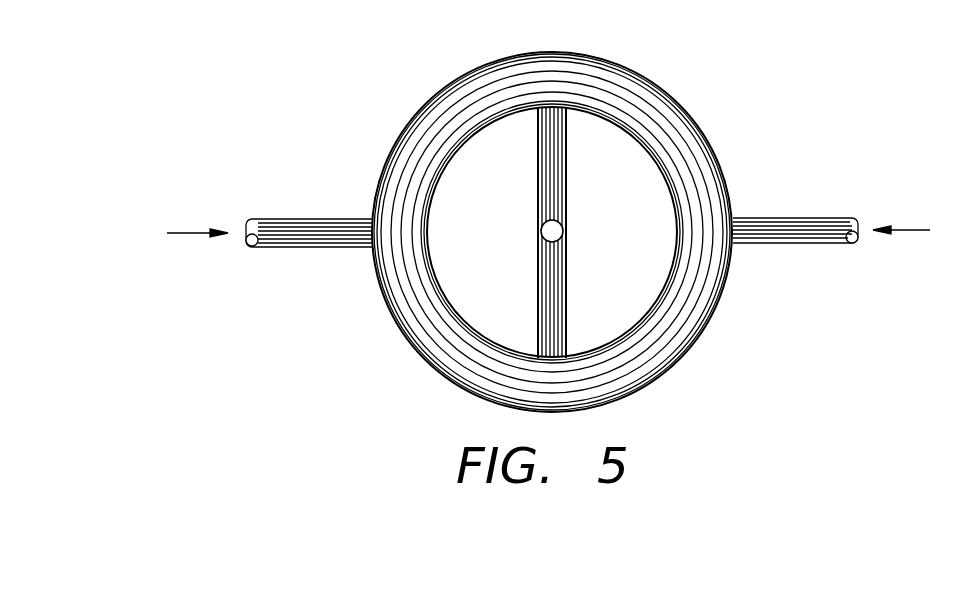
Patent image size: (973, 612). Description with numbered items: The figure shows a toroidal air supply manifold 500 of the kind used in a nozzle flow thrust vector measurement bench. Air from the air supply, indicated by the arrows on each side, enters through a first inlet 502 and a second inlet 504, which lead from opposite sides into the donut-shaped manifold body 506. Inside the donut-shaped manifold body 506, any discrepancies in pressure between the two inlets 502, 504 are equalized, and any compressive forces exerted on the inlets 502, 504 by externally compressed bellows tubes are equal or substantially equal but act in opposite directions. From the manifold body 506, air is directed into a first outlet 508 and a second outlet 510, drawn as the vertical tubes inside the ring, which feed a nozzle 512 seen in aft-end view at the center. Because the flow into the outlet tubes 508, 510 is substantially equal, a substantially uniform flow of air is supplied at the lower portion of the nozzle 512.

The air supply manifold 500 is at (548, 214).
The first inlet 502 is at (307, 218).
The second inlet 504 is at (790, 217).
The donut-shaped manifold body 506 is at (702, 128).
The first outlet 508 is at (567, 180).
The second outlet 510 is at (566, 333).
The nozzle 512 is at (563, 230).